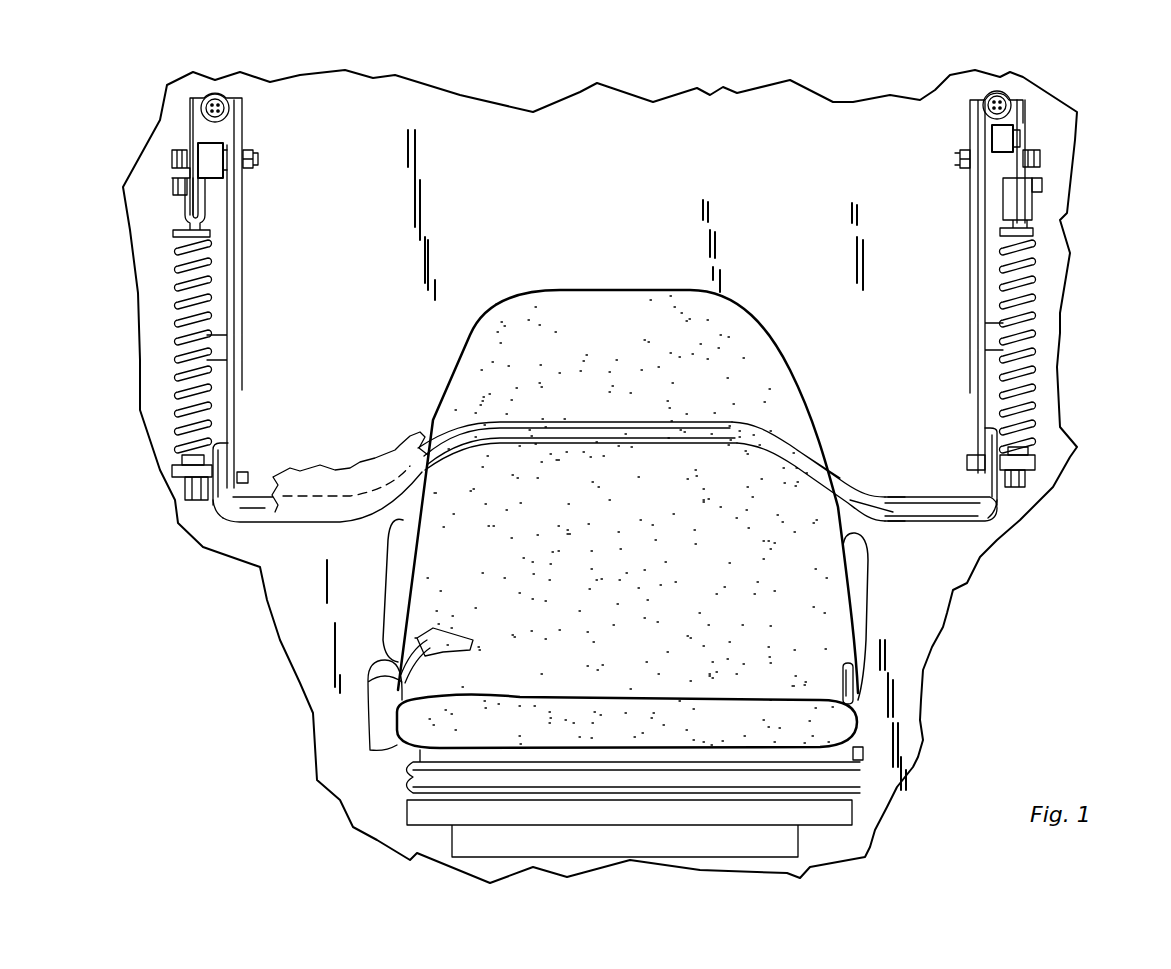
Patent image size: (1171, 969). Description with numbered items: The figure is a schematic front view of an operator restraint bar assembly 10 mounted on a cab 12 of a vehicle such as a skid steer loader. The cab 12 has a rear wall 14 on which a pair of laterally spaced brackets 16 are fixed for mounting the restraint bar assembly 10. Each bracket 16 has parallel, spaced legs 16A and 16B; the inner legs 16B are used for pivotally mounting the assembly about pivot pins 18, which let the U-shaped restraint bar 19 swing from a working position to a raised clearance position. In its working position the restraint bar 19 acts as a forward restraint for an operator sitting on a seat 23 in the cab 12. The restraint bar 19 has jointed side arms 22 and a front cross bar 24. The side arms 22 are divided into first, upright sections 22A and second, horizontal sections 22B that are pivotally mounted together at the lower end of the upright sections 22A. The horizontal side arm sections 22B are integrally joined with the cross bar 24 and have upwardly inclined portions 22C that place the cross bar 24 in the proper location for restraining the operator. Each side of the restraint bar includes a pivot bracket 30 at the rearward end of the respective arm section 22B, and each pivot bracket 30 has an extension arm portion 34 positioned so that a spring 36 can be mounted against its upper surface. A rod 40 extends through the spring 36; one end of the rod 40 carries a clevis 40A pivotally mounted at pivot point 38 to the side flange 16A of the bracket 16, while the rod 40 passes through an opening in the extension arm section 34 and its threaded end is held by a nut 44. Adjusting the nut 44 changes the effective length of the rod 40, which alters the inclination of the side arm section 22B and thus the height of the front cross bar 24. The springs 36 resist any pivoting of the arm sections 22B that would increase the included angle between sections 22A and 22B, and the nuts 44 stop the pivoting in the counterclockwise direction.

The operator restraint bar assembly 10 is at (747, 449).
The cab 12 is at (376, 109).
The rear wall 14 is at (577, 205).
The bracket 16 is at (222, 129).
The side flange 16A is at (190, 108).
The inner leg 16B is at (245, 366).
The pivot pin 18 is at (258, 160).
The U-shaped restraint bar 19 is at (895, 500).
The side arm 22 is at (222, 505).
The first side arm section 22A is at (233, 412).
The second side arm section 22B is at (215, 517).
The upwardly inclined portion 22C is at (838, 470).
The seat 23 is at (427, 712).
The front cross bar 24 is at (562, 421).
The pivot bracket 30 is at (230, 444).
The extension arm portion 34 is at (172, 477).
The spring 36 is at (176, 447).
The pivot point 38 is at (1042, 185).
The rod 40 is at (176, 318).
The clevis 40A is at (190, 217).
The nut 44 is at (172, 492).